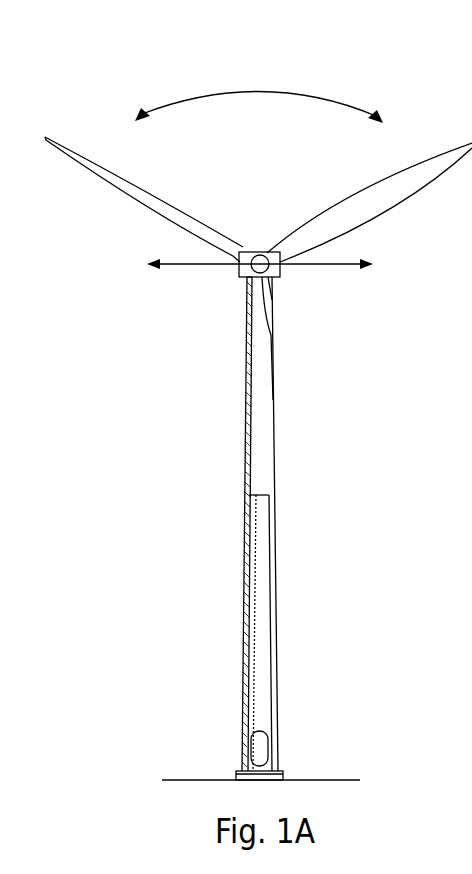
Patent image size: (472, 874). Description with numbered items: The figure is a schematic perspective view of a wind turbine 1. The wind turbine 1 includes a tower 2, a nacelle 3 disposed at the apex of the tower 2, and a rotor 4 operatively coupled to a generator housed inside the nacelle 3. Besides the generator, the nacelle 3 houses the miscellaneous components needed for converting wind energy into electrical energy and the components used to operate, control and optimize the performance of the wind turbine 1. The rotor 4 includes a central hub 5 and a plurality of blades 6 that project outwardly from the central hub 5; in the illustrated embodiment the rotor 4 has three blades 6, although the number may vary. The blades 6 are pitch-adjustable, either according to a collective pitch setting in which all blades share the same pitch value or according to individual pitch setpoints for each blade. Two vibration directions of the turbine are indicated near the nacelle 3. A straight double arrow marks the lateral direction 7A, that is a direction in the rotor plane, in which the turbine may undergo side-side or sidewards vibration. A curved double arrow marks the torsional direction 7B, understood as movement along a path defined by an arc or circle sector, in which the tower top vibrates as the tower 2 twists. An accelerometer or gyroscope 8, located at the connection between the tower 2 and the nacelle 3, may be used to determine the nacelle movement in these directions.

The wind turbine 1 is at (428, 110).
The tower 2 is at (265, 552).
The nacelle 3 is at (240, 275).
The rotor 4 is at (291, 311).
The central hub 5 is at (284, 275).
The blades 6 is at (388, 188).
The lateral direction 7A is at (342, 267).
The torsional direction 7B is at (297, 92).
The accelerometer or gyroscope 8 is at (247, 283).